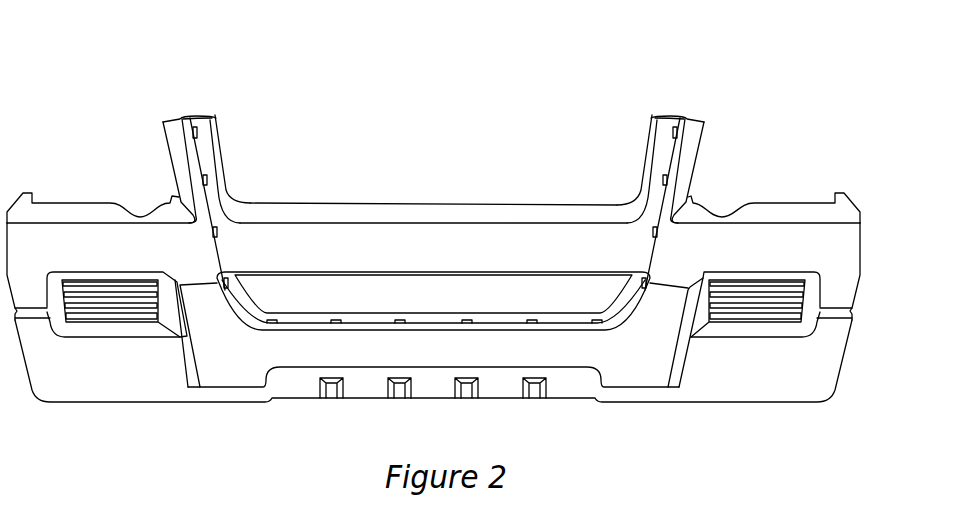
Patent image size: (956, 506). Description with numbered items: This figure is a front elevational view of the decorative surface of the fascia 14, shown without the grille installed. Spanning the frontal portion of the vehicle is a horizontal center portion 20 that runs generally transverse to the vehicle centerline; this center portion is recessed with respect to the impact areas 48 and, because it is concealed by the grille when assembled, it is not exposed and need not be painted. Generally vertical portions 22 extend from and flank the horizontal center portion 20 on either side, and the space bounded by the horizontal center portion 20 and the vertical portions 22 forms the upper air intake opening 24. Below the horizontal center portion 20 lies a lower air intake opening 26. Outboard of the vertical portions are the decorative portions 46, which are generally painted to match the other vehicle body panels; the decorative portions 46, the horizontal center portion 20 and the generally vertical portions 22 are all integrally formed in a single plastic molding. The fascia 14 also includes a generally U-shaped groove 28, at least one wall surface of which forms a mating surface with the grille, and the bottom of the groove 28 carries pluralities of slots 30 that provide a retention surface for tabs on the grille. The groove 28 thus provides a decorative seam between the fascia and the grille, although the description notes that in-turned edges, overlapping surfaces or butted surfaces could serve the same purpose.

The fascia 14 is at (684, 60).
The horizontal center portion 20 is at (321, 256).
The generally vertical portions 22 is at (198, 128).
The upper air intake opening 24 is at (446, 171).
The lower air intake opening 26 is at (448, 299).
The U-shaped groove 28 is at (187, 120).
The slots 30 is at (207, 180).
The decorative portions 46 is at (42, 273).
The impact areas 48 is at (241, 361).